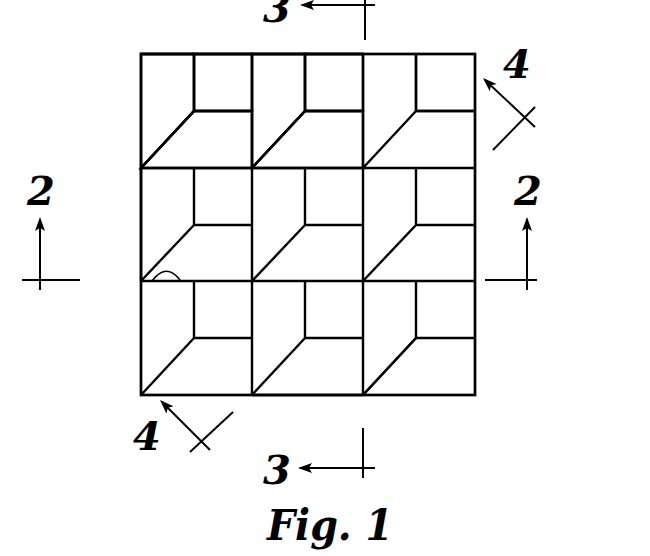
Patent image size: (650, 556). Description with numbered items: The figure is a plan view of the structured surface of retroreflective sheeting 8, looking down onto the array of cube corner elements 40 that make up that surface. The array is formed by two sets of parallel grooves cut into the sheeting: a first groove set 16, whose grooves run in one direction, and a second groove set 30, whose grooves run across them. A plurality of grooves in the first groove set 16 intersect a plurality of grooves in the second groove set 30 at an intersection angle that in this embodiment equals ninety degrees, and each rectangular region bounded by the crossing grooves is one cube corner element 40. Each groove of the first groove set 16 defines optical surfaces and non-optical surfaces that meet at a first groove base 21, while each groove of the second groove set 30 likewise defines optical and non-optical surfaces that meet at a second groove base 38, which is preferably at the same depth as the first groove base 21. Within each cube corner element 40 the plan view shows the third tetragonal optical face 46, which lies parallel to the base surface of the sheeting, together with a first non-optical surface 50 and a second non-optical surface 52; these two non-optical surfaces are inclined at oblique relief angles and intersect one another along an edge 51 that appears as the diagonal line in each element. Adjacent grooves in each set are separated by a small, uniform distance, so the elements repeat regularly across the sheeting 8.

The retroreflective sheeting 8 is at (512, 28).
The cube corner element 40 is at (281, 50).
The first non-optical surface 50 is at (180, 105).
The third tetragonal optical face 46 is at (238, 97).
The second non-optical surface 52 is at (231, 155).
The edge 51 is at (162, 148).
The second groove set 30 is at (134, 168).
The second groove base 38 is at (155, 277).
The first groove set 16 is at (363, 398).
The first groove base 21 is at (372, 381).